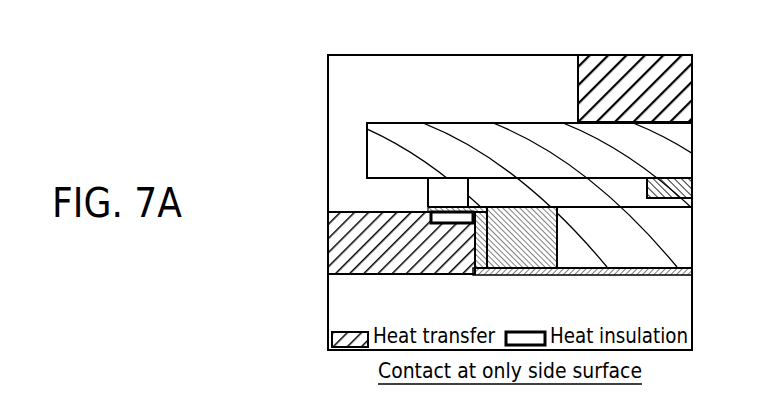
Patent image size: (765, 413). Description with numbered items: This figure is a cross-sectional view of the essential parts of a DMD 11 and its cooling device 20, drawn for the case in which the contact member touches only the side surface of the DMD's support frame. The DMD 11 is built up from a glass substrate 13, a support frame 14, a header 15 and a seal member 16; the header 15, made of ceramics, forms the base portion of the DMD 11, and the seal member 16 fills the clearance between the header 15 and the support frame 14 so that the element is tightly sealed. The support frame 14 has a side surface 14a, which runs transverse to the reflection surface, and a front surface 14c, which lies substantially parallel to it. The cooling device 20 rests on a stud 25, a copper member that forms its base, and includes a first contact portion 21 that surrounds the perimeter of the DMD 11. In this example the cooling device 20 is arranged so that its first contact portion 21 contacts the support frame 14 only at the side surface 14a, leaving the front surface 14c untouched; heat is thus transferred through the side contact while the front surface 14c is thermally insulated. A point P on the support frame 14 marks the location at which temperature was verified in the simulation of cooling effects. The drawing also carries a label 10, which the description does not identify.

The upper heat source unit 10 is at (471, 69).
The cooling device 20 is at (417, 78).
The header 15 is at (455, 150).
The seal member 16 is at (455, 190).
The stud 25 is at (582, 82).
The point P is at (483, 204).
The first contact portion 21 is at (356, 262).
The support frame 14 is at (523, 255).
The side surface 14a is at (476, 255).
The front surface 14c is at (441, 229).
The DMD 11 is at (645, 282).
The glass substrate 13 is at (677, 250).